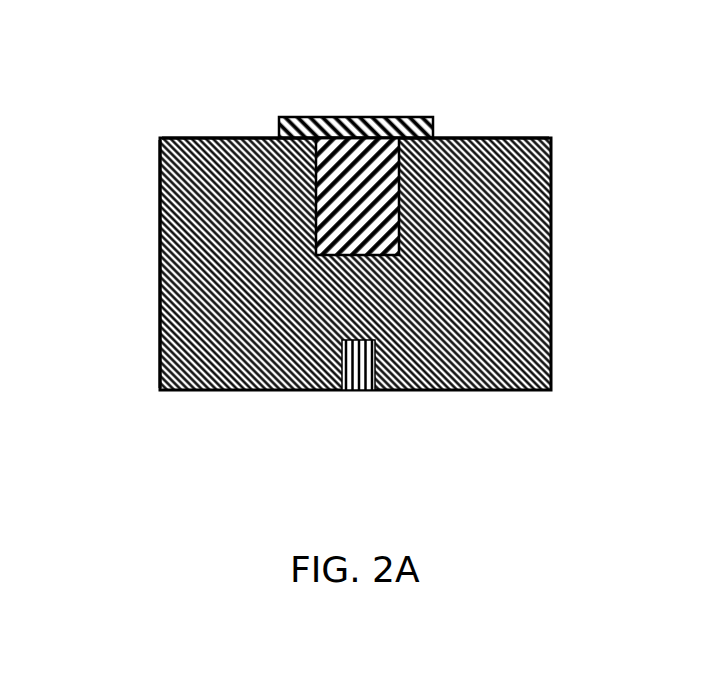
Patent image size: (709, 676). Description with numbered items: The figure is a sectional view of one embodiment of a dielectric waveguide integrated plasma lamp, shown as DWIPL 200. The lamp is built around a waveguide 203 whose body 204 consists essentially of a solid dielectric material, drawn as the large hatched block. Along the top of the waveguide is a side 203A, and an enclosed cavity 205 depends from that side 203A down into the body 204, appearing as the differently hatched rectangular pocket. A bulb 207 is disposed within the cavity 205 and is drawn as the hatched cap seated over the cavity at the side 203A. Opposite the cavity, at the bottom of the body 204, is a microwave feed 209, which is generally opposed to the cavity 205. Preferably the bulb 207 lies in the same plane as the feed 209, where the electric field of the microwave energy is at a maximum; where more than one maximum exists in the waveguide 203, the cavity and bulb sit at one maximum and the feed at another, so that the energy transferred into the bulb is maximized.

The DWIPL 200 is at (364, 242).
The waveguide 203 is at (298, 234).
The side 203A is at (327, 108).
The body 204 is at (160, 162).
The cavity 205 is at (460, 171).
The bulb 207 is at (352, 117).
The microwave feed 209 is at (358, 389).